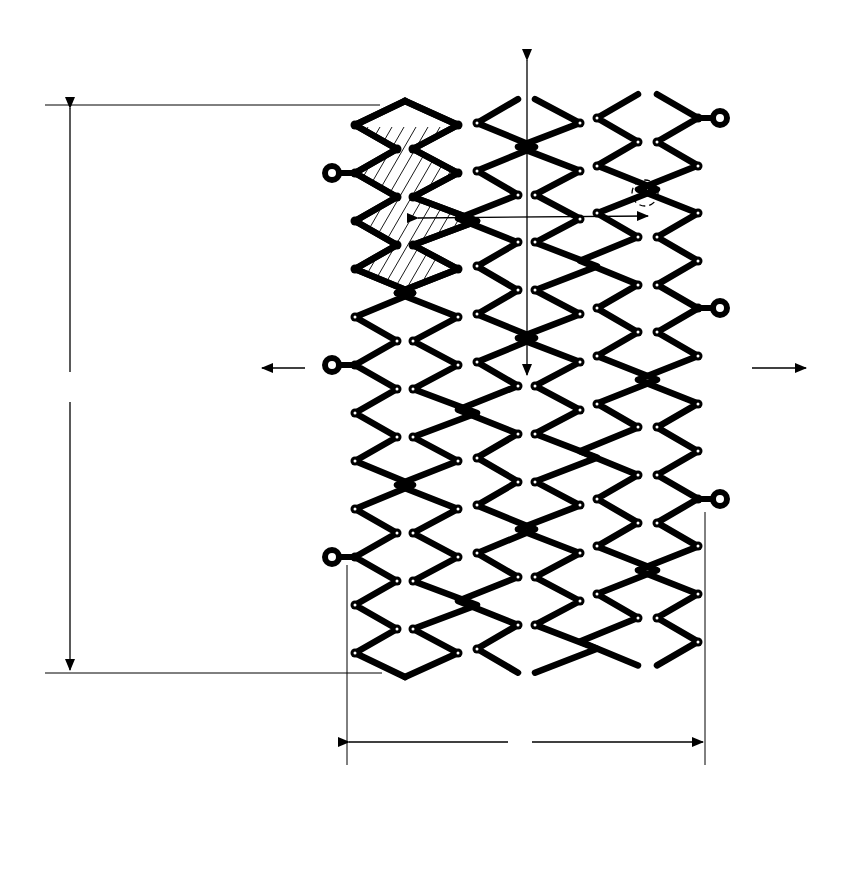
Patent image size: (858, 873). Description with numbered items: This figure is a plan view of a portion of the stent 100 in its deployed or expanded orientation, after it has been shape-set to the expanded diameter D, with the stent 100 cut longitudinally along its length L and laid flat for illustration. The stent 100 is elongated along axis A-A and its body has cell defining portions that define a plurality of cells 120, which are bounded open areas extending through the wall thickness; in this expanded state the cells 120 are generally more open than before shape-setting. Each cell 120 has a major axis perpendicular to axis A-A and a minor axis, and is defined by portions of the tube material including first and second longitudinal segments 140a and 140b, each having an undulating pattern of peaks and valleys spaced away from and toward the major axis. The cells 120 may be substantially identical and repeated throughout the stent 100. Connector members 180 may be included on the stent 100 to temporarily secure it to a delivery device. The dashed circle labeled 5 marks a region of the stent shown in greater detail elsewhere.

The stent 100 is at (576, 64).
The cells 120 is at (500, 168).
The first longitudinal segment 140a is at (386, 108).
The second longitudinal segment 140b is at (424, 110).
The connector members 180 is at (324, 166).
The detail region (FIG. 5) 5 is at (660, 191).